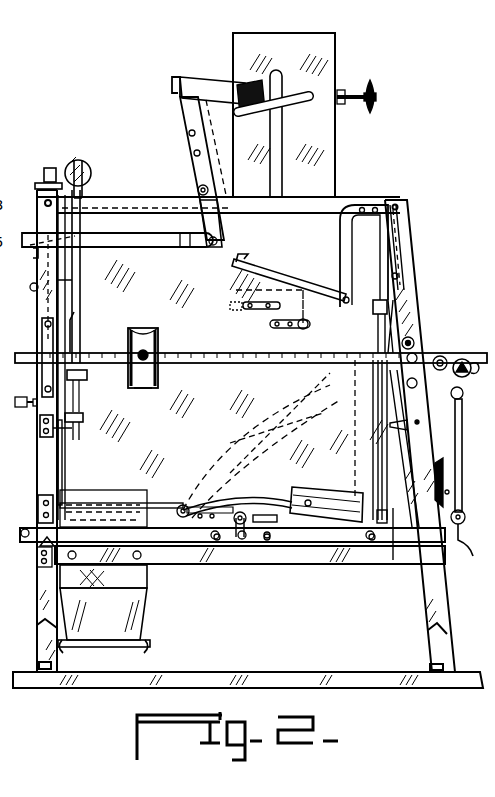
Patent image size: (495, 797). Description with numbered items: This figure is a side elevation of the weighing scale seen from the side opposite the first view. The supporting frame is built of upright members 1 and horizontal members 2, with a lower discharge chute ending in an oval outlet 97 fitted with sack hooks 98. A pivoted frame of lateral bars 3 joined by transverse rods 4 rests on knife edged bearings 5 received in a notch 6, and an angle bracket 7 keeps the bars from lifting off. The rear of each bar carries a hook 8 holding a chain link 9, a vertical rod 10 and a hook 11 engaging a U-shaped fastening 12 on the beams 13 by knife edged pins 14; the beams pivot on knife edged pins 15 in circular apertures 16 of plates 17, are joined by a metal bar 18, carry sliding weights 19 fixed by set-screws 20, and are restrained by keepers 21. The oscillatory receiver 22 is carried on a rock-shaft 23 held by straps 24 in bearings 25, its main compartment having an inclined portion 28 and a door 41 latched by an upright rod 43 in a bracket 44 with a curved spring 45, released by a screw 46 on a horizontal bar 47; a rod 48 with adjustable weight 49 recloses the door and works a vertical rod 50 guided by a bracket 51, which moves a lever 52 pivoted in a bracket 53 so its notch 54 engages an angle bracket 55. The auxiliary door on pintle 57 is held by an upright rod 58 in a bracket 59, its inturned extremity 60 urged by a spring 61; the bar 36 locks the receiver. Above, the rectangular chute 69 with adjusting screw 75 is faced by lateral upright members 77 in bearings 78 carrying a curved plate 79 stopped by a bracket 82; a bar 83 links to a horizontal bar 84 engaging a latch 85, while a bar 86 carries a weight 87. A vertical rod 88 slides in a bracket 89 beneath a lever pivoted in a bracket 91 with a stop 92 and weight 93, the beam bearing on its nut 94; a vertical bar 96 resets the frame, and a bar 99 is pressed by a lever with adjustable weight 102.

The upright members 1 is at (411, 242).
The horizontal members 2 is at (147, 197).
The lateral bars 3 is at (185, 543).
The transverse rods 4 is at (245, 545).
The knife edged bearings 5 is at (36, 560).
The notch 6 is at (25, 529).
The angle bracket 7 is at (38, 505).
The hooks 8 is at (469, 547).
The chain link 9 is at (466, 522).
The vertical rod 10 is at (462, 448).
The hook 11 is at (463, 391).
The U-shaped fastening 12 is at (480, 366).
The beams 13 is at (186, 353).
The knife edged pins 14 is at (466, 359).
The knife edged pins 15 is at (416, 354).
The circular apertures 16 is at (412, 337).
The plates 17 is at (417, 385).
The metal bar 18 is at (444, 356).
The sliding weights 19 is at (140, 388).
The set-screws 20 is at (140, 356).
The keepers 21 is at (42, 345).
The oscillatory receiver 22 is at (244, 369).
The rock-shaft 23 is at (262, 545).
The straps 24 is at (276, 545).
The bearings 25 is at (239, 540).
The inclined portion 28 is at (318, 445).
The bar 36 is at (31, 288).
The door 41 is at (150, 503).
The upright rod 43 is at (63, 470).
The bracket 44 is at (76, 440).
The curved spring 45 is at (75, 322).
The screw 46 is at (18, 397).
The horizontal bar 47 is at (33, 405).
The rod 48 is at (242, 497).
The adjustable weight 49 is at (316, 500).
The vertical rod 50 is at (376, 448).
The bracket 51 is at (410, 425).
The lever 52 is at (282, 276).
The bracket 53 is at (348, 247).
The notch 54 is at (239, 263).
The angle bracket 55 is at (262, 310).
The pintle 57 is at (300, 329).
The upright rod 58 is at (400, 232).
The bracket 59 is at (400, 276).
The inturned extremity 60 is at (372, 338).
The spring 61 is at (380, 342).
The rectangular chute 69 is at (338, 40).
The adjusting screw 75 is at (368, 105).
The lateral upright members 77 is at (185, 103).
The bearings 78 is at (196, 189).
The curved plate 79 is at (221, 80).
The bracket 82 is at (173, 75).
The bar 83 is at (208, 226).
The horizontal bar 84 is at (145, 241).
The latch 85 is at (33, 254).
The bar 86 is at (284, 98).
The weight 87 is at (252, 113).
The vertical rod 88 is at (80, 248).
The bracket 89 is at (80, 414).
The bracket 91 is at (38, 189).
The stop 92 is at (44, 176).
The weight 93 is at (84, 164).
The nut 94 is at (87, 375).
The vertical bar 96 is at (285, 177).
The outlet 97 is at (103, 602).
The hooks 98 is at (150, 646).
The bar 99 is at (394, 562).
The adjustable weight 102 is at (446, 473).